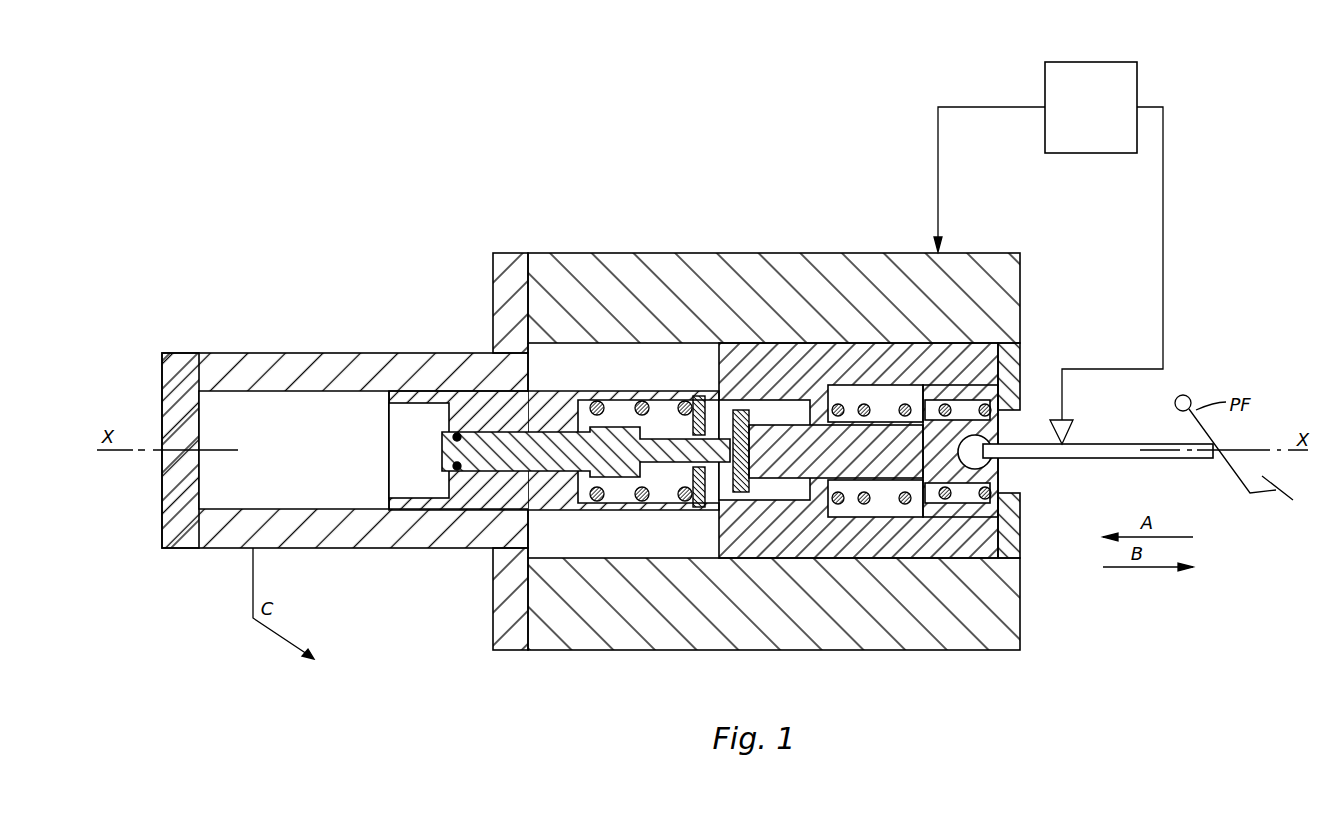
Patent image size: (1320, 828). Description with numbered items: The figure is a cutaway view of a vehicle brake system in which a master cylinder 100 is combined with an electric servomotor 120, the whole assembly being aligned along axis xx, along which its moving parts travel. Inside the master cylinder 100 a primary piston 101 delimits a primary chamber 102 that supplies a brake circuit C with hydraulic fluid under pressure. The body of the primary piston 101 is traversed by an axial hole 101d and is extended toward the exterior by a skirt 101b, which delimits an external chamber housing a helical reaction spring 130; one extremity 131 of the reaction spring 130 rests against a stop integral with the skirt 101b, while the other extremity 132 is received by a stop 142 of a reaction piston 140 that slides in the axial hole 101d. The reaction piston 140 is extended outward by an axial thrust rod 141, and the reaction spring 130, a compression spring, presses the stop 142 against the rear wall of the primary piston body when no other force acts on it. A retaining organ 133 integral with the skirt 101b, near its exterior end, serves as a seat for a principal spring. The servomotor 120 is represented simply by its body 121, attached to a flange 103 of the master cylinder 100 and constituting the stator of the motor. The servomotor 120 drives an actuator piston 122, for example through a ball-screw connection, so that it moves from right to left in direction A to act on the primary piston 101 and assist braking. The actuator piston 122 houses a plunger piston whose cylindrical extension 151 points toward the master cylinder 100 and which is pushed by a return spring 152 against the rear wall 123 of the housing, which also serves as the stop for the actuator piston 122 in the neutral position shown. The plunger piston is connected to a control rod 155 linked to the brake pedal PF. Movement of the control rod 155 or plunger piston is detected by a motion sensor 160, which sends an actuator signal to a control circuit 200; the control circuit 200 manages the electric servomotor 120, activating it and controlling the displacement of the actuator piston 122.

The master cylinder 100 is at (286, 372).
The primary piston 101 is at (480, 498).
The skirt 101b is at (640, 505).
The axial hole 101d is at (494, 424).
The primary chamber 102 is at (334, 450).
The flange 103 is at (503, 268).
The electric servomotor 120 is at (797, 414).
The body 121 is at (582, 272).
The actuator piston 122 is at (931, 355).
The rear wall 123 is at (1005, 362).
The reaction spring 130 is at (688, 321).
The extremity of reaction spring 131 is at (679, 390).
The other extremity of reaction spring 132 is at (610, 392).
The retaining organ 133 is at (741, 410).
The reaction piston 140 is at (536, 461).
The axial thrust rod 141 is at (659, 470).
The stop 142 is at (585, 503).
The cylindrical extension 151 is at (904, 458).
The return spring 152 is at (870, 498).
The control rod 155 is at (1095, 458).
The motion sensor 160 is at (1068, 425).
The control circuit 200 is at (1035, 157).